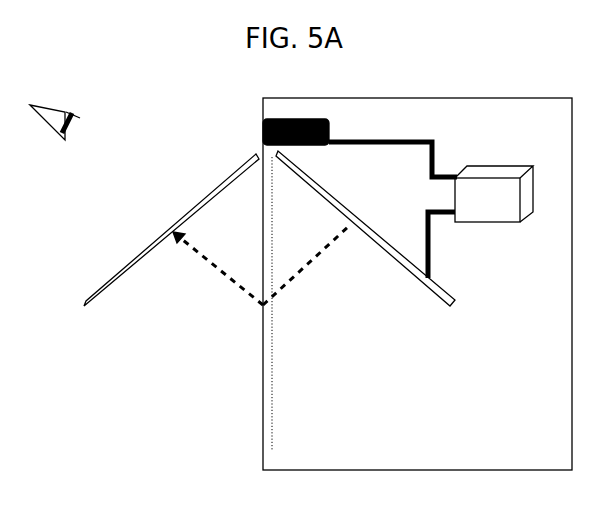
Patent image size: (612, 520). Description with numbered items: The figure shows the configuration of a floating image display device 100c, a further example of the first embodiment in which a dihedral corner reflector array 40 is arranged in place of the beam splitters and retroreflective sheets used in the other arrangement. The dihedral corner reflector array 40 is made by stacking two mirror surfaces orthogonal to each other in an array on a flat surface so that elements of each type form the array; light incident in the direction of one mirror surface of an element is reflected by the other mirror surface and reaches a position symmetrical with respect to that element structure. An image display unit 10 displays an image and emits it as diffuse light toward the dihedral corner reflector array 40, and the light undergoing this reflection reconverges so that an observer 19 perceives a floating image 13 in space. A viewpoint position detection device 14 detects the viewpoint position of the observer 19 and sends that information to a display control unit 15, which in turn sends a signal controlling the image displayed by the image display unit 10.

The floating image display device 100c is at (408, 93).
The dihedral corner reflector array 40 is at (271, 398).
The viewpoint position detection device 14 is at (331, 128).
The display control unit 15 is at (460, 178).
The image display unit 10 is at (340, 198).
The floating image 13 is at (97, 290).
The observer 19 is at (70, 113).